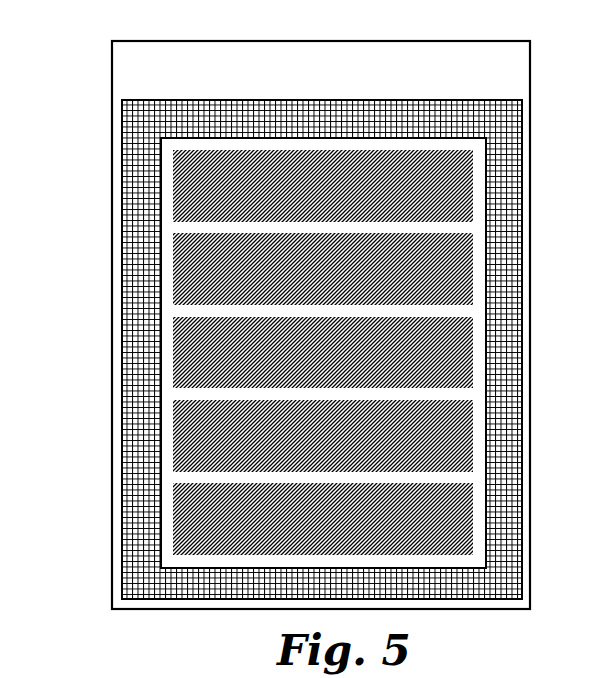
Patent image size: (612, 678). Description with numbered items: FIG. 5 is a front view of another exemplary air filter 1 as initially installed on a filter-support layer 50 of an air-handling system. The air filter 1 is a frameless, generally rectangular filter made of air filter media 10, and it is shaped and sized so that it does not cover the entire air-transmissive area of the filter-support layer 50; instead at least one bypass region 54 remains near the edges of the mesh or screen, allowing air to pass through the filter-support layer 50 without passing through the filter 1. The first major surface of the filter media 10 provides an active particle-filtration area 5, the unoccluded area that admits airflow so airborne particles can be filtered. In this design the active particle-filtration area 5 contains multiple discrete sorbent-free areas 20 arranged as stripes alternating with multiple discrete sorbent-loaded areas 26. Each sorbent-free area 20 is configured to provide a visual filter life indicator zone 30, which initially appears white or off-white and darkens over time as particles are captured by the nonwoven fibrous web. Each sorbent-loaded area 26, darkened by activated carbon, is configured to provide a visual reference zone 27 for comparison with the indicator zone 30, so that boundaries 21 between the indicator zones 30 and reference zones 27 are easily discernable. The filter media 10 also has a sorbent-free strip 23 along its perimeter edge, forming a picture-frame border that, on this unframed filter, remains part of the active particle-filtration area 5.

The air filter 1 is at (248, 134).
The active particle-filtration area 5 is at (261, 258).
The air filter media 10 is at (220, 282).
The sorbent-free area 20 is at (183, 310).
The boundary 21 is at (462, 316).
The strip 23 is at (478, 193).
The sorbent-loaded area 26 is at (190, 526).
The visual reference zone 27 is at (190, 440).
The visual filter life indicator zone 30 is at (183, 395).
The filter-support layer 50 is at (127, 67).
The bypass region 54 is at (460, 585).